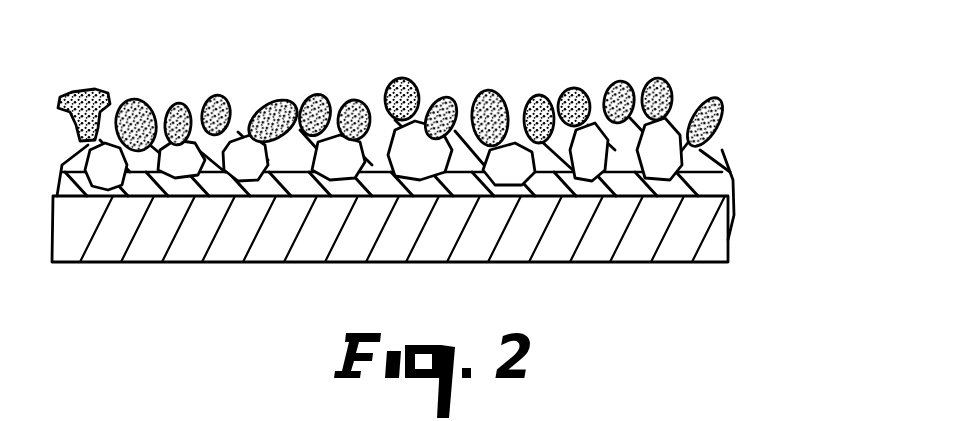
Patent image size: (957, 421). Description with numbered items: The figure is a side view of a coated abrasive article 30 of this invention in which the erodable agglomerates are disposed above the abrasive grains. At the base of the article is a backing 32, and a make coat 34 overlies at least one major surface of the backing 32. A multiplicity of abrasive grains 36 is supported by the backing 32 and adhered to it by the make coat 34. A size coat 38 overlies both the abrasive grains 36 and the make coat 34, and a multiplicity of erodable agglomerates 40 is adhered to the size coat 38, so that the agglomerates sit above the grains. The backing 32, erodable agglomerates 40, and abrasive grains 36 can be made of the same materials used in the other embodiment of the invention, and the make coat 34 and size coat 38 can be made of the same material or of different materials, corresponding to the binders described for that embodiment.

The coated abrasive article 30 is at (455, 163).
The backing 32 is at (678, 243).
The make coat 34 is at (700, 181).
The abrasive grains 36 is at (520, 160).
The size coat 38 is at (697, 155).
The erodable agglomerates 40 is at (615, 87).